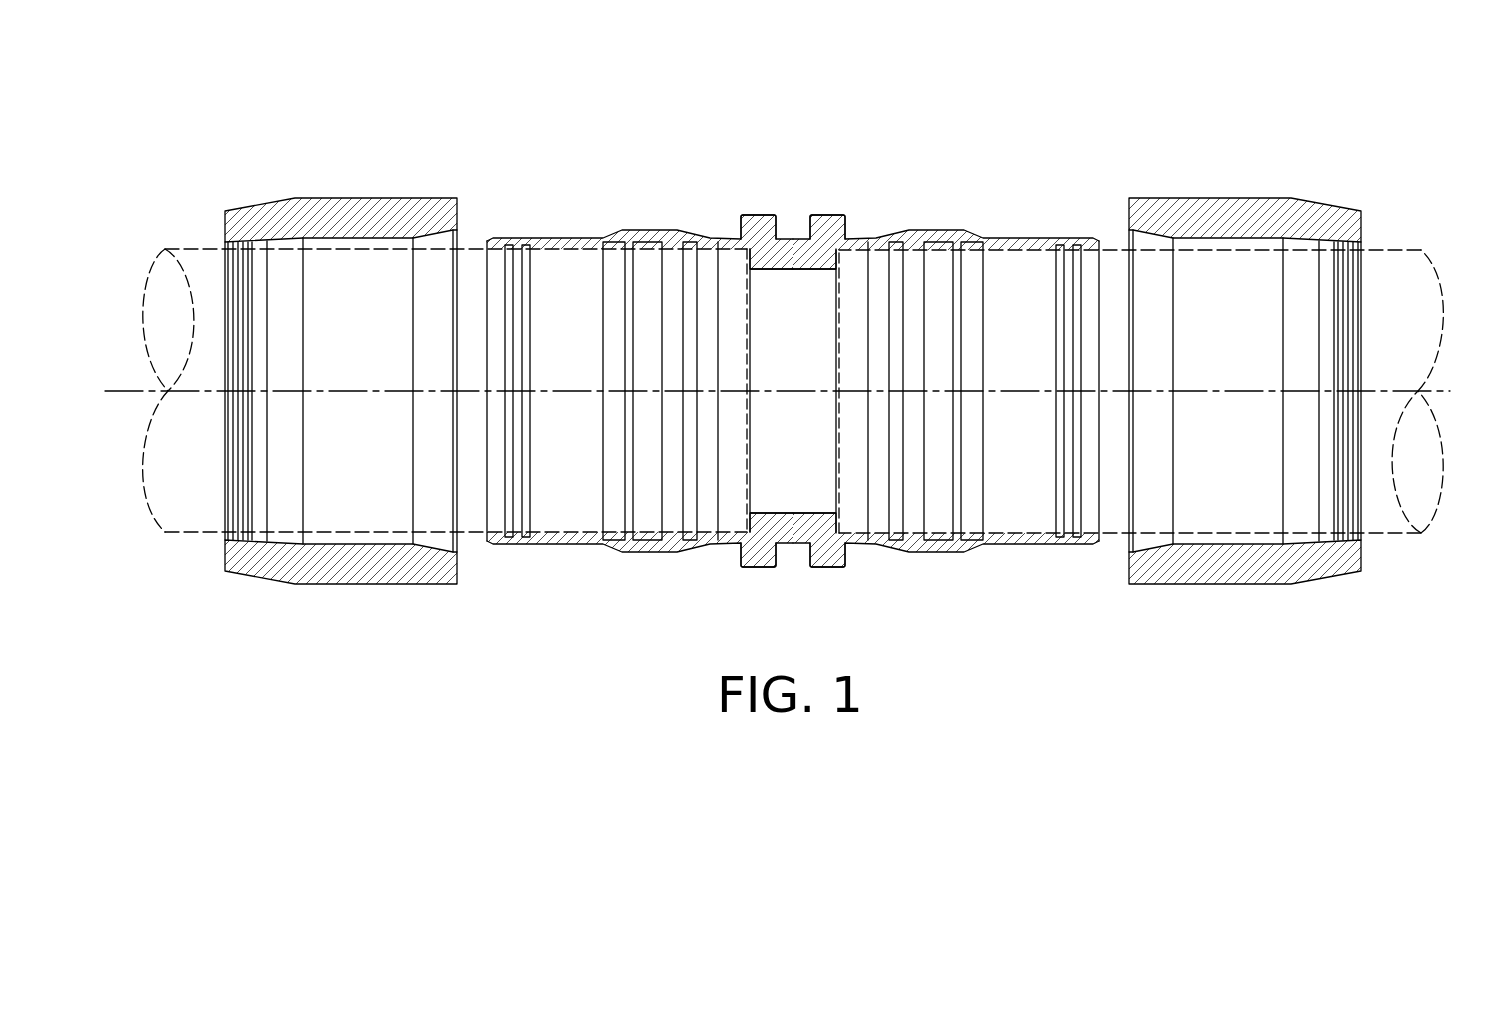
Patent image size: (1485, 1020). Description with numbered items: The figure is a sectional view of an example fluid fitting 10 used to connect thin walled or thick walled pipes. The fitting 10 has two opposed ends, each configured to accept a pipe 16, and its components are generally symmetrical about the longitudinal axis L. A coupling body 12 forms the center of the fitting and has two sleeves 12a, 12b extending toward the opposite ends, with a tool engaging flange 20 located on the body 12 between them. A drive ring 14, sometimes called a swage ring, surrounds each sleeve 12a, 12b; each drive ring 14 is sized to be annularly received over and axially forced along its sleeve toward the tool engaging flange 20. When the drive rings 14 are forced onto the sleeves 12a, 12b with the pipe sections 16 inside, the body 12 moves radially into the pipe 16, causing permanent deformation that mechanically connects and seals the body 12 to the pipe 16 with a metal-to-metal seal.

The fitting 10 is at (1376, 85).
The body 12 is at (796, 248).
The sleeve 12a is at (568, 220).
The sleeve 12b is at (1018, 220).
The drive ring 14 is at (362, 210).
The pipe 16 is at (474, 536).
The tool engaging flange 20 is at (756, 222).
The longitudinal axis L is at (122, 391).